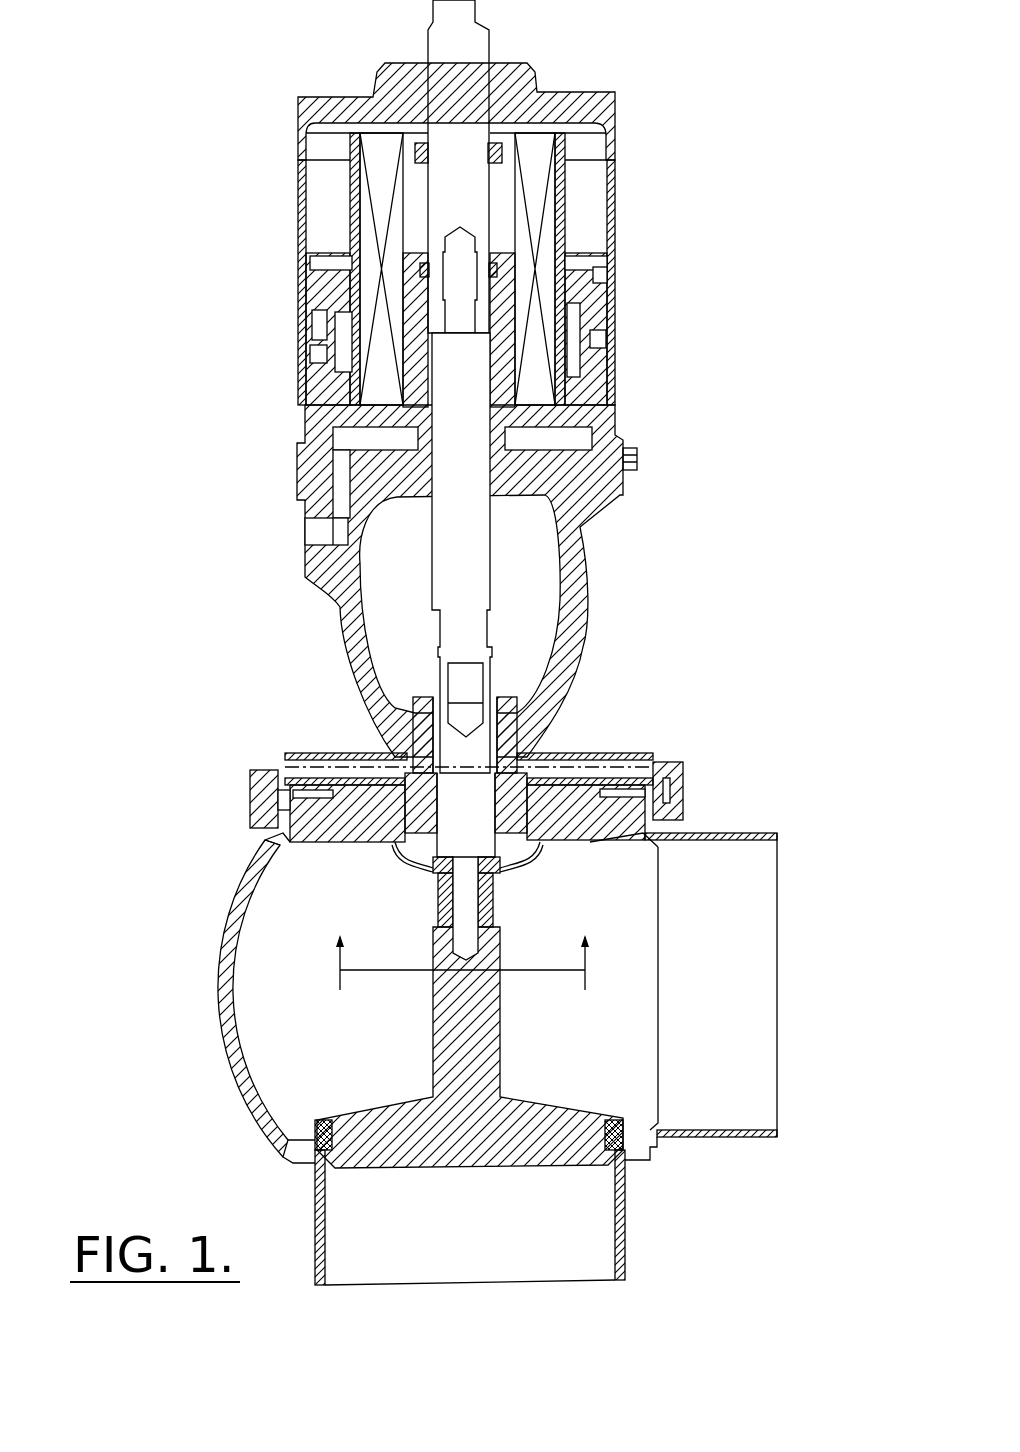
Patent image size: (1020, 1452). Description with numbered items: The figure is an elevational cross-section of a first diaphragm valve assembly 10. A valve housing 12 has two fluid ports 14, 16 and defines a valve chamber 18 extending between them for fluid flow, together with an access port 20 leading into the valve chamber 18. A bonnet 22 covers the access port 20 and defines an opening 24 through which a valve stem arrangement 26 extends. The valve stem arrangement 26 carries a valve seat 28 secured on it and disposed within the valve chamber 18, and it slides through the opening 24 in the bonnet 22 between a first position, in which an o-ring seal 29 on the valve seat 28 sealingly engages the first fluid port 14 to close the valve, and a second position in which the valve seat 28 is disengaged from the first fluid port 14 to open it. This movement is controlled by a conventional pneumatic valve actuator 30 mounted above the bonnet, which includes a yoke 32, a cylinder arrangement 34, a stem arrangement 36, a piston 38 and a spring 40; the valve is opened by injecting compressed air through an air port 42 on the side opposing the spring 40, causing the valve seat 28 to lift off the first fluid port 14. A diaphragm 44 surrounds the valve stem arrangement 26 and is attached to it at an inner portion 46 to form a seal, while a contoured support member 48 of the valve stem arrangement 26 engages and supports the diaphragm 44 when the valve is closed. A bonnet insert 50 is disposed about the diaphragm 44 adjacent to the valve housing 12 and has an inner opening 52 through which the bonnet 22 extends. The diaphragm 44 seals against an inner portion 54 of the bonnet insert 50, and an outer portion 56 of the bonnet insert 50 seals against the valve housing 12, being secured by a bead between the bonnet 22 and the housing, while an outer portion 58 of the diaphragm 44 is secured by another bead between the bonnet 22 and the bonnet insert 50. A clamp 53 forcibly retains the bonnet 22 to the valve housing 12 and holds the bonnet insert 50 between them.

The diaphragm valve assembly 10 is at (120, 770).
The valve housing 12 is at (222, 1005).
The first fluid port 14 is at (437, 1219).
The fluid port 16 is at (728, 965).
The valve chamber 18 is at (280, 1024).
The access port 20 is at (343, 864).
The bonnet 22 is at (565, 753).
The opening 24 is at (415, 799).
The valve stem arrangement 26 is at (436, 885).
The valve seat 28 is at (553, 1120).
The o-ring seal 29 is at (317, 1114).
The pneumatic valve actuator 30 is at (494, 386).
The yoke 32 is at (582, 617).
The cylinder arrangement 34 is at (608, 132).
The stem arrangement 36 is at (475, 582).
The piston 38 is at (325, 380).
The spring 40 is at (375, 235).
The air port 42 is at (292, 526).
The diaphragm 44 is at (502, 862).
The inner portion 46 is at (495, 885).
The contoured support member 48 is at (440, 835).
The bonnet insert 50 is at (600, 842).
The inner opening 52 is at (560, 788).
The clamp 53 is at (668, 785).
The inner portion 54 is at (548, 838).
The outer portion 56 is at (648, 838).
The outer portion 58 is at (395, 840).